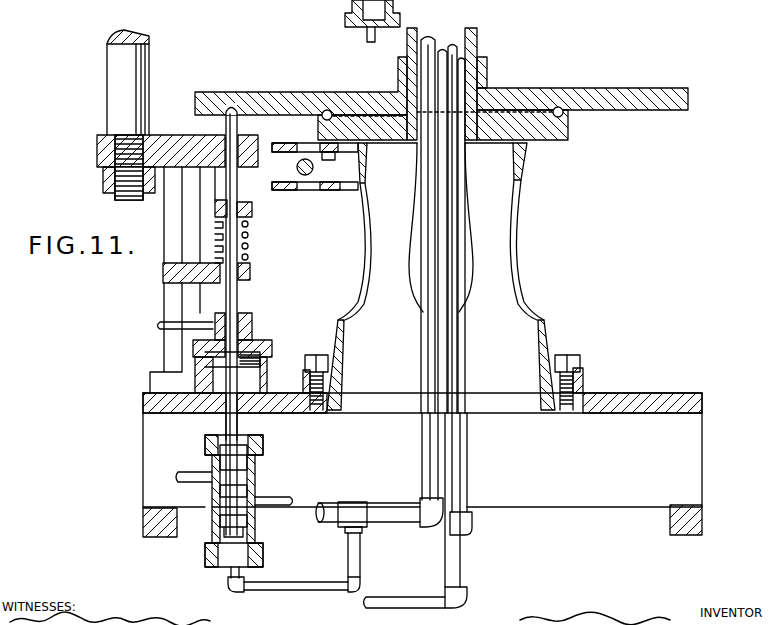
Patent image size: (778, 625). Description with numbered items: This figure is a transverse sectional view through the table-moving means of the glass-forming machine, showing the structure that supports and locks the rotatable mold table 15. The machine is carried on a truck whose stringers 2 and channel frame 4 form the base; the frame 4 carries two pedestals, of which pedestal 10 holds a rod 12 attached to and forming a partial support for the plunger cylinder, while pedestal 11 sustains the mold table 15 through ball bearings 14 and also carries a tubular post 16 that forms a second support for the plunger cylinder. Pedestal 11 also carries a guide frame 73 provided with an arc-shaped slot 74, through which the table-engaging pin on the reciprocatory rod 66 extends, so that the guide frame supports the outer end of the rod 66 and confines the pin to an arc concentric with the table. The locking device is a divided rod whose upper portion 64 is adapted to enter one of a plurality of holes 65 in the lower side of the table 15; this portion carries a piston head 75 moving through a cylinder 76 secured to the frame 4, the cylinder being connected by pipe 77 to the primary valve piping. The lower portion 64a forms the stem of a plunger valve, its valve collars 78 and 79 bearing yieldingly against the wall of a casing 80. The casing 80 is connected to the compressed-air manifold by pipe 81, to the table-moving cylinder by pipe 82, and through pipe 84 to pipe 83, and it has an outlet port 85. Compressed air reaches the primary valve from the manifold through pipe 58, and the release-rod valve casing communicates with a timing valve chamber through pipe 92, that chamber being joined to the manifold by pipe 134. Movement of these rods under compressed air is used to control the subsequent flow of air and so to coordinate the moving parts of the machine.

The stringers 2 is at (143, 520).
The channel frame 4 is at (654, 393).
The pedestal 10 is at (170, 296).
The pedestal 11 is at (548, 328).
The rod 12 is at (107, 97).
The ball bearings 14 is at (570, 117).
The mold table 15 is at (684, 88).
The tubular post 16 is at (473, 44).
The pipe 58 is at (468, 479).
The locking rod portion 64 is at (235, 380).
The locking rod portion 64a is at (242, 425).
The holes 65 is at (236, 110).
The reciprocatory rod 66 is at (297, 167).
The guide frame 73 is at (336, 190).
The arc-shaped slot 74 is at (305, 143).
The piston head 75 is at (203, 362).
The cylinder 76 is at (268, 357).
The pipe 77 is at (157, 325).
The valve collar 78 is at (258, 483).
The valve collar 79 is at (257, 522).
The casing 80 is at (257, 538).
The pipe 81 is at (193, 467).
The pipe 82 is at (294, 495).
The pipe 83 is at (423, 457).
The pipe 84 is at (309, 590).
The outlet port 85 is at (205, 515).
The pipe 92 is at (368, 37).
The pipe 134 is at (448, 44).